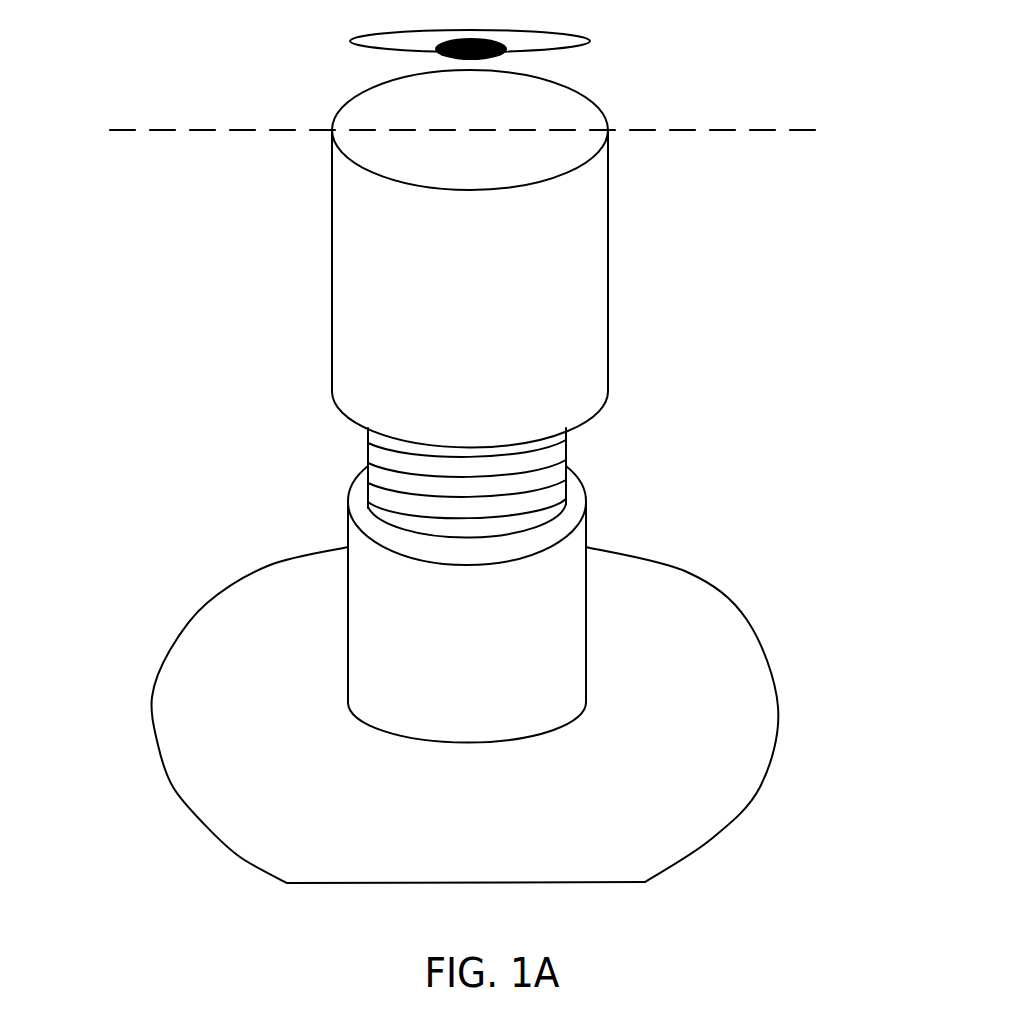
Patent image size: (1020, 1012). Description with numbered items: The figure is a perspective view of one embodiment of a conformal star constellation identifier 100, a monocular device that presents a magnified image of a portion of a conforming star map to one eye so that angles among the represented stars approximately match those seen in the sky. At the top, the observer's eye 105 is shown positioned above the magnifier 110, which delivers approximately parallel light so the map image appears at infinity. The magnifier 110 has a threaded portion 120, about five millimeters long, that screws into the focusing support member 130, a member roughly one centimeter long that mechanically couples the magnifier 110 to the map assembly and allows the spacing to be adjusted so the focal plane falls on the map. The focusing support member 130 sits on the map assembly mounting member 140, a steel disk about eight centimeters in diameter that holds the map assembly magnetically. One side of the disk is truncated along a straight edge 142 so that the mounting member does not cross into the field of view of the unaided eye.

The conformal star constellation identifier 100 is at (230, 352).
The observer's eye 105 is at (585, 49).
The magnifier 110 is at (608, 307).
The threaded portion 120 is at (566, 448).
The focusing support member 130 is at (586, 602).
The map assembly mounting member 140 is at (760, 738).
The edge 142 is at (585, 882).